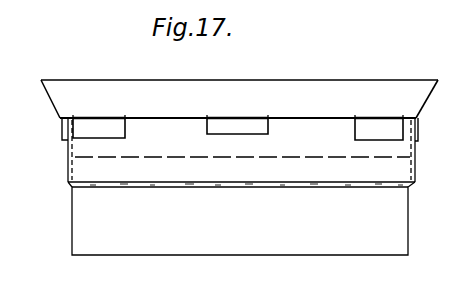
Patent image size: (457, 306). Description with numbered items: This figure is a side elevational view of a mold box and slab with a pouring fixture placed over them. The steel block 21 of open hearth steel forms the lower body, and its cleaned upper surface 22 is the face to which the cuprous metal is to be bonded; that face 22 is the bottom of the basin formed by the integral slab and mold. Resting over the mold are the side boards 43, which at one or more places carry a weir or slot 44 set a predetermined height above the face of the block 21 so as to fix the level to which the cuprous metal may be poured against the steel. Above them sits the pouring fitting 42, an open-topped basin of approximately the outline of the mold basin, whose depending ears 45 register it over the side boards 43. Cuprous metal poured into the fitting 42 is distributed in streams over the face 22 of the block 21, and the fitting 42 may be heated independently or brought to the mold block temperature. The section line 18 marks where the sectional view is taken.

The section line 18- 18 is at (252, 63).
The block 21 is at (315, 242).
The upper surface 22 is at (91, 155).
The pouring fitting 42 is at (335, 87).
The side boards 43 is at (80, 169).
The weir or slot 44 is at (248, 123).
The depending ears 45 is at (86, 130).